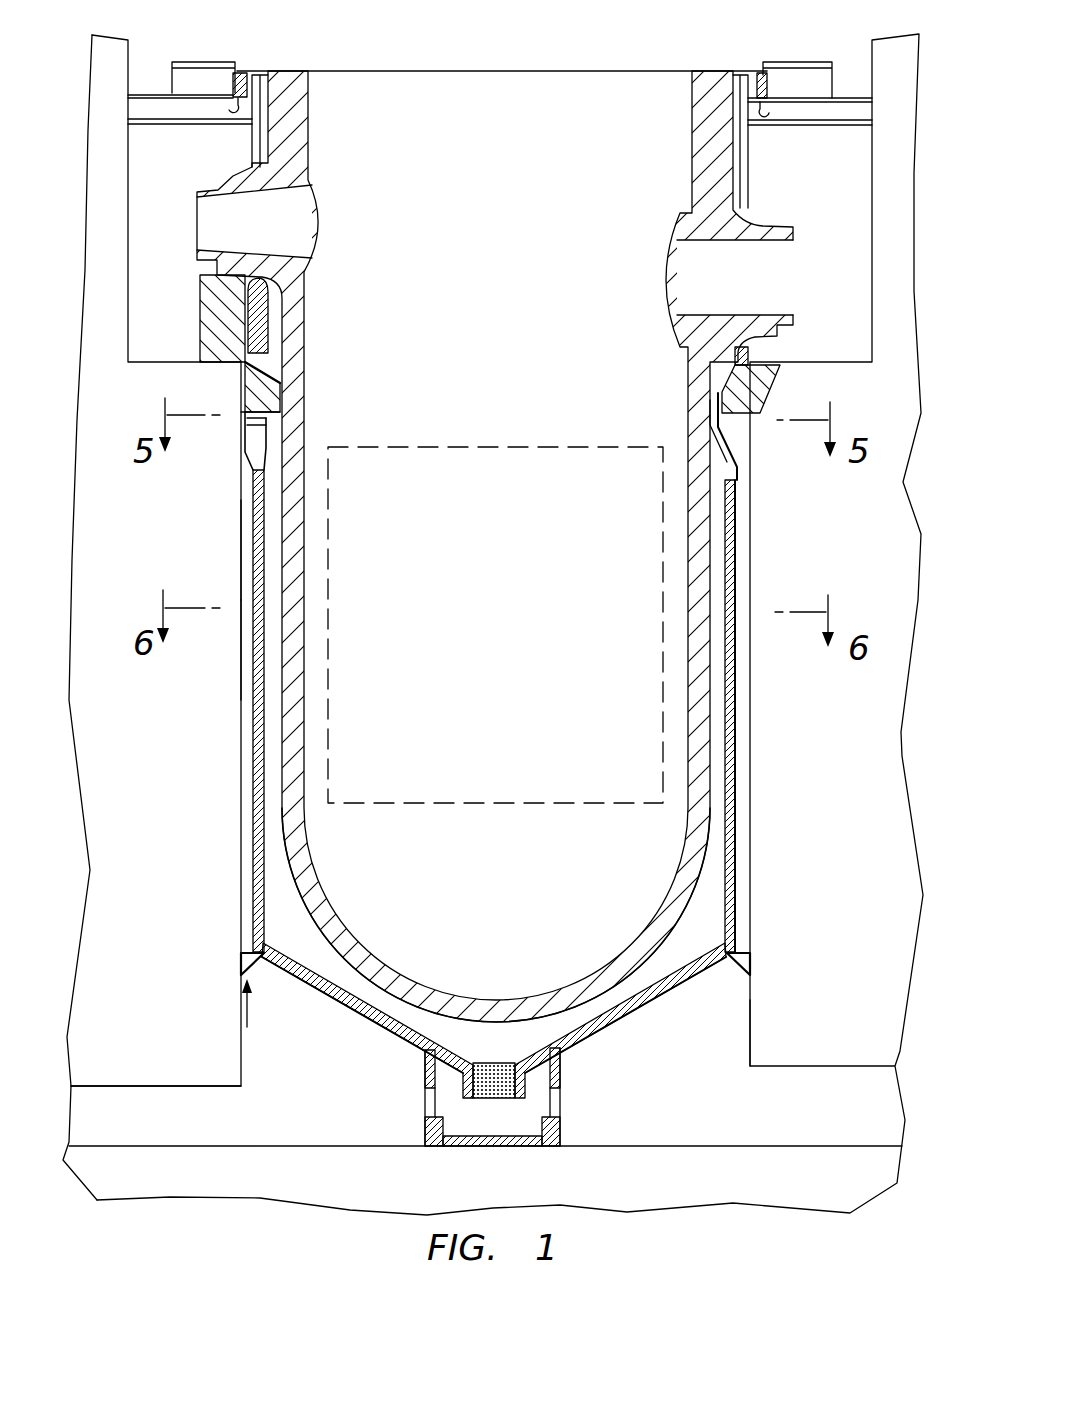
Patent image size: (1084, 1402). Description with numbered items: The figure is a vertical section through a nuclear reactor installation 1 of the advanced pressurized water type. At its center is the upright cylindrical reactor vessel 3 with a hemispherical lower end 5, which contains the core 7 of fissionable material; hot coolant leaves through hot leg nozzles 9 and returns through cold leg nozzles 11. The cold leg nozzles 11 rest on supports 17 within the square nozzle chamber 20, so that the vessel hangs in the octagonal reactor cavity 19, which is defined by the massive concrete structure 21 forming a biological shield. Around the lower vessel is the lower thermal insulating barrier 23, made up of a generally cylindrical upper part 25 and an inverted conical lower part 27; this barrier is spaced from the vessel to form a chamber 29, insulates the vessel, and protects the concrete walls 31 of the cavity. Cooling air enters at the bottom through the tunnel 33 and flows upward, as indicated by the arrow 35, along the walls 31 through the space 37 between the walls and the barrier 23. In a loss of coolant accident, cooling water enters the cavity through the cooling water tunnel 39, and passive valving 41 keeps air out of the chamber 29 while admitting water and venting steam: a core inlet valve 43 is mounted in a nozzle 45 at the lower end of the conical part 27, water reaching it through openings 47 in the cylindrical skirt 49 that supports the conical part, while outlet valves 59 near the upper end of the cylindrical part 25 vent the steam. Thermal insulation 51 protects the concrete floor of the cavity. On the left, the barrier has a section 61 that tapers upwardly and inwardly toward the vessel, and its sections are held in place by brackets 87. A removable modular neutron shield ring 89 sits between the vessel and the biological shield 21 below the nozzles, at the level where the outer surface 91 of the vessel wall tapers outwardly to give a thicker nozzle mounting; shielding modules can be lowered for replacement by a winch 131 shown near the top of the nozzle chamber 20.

The nuclear reactor installation 1 is at (672, 55).
The reactor vessel 3 is at (716, 648).
The hemispherical lower end 5 is at (670, 937).
The core 7 is at (530, 803).
The hot leg nozzle 9 is at (783, 231).
The cold leg nozzle 11 is at (214, 192).
The support 17 is at (202, 328).
The reactor cavity 19 is at (715, 1040).
The nozzle chamber 20 is at (840, 152).
The concrete structure 21 is at (158, 801).
The lower thermal insulating barrier 23 is at (250, 694).
The cylindrical upper part 25 is at (257, 662).
The inverted conical lower part 27 is at (647, 1003).
The chamber 29 is at (712, 878).
The concrete walls 31 is at (250, 448).
The tunnel 33 is at (152, 1110).
The arrow 35 is at (250, 1028).
The space 37 is at (250, 560).
The cooling water tunnel 39 is at (858, 1090).
The passive valving 41 is at (405, 1067).
The core inlet valve 43 is at (492, 1063).
The nozzle 45 is at (463, 1090).
The openings 47 is at (562, 1103).
The cylindrical skirt 49 is at (563, 1075).
The thermal insulation 51 is at (475, 1137).
The outlet valve 59 is at (720, 444).
The section 61 is at (267, 448).
The bracket 87 is at (262, 960).
The shield ring 89 is at (263, 398).
The outer surface 91 is at (283, 373).
The winch 131 is at (236, 108).